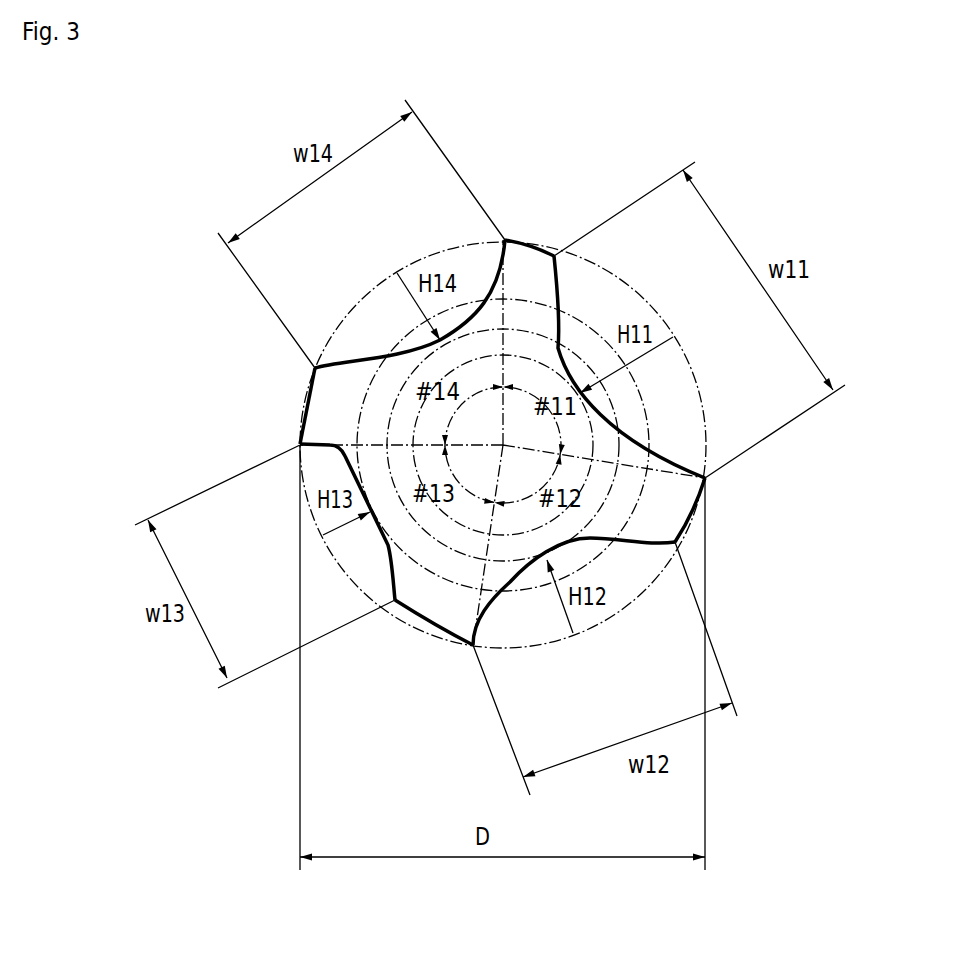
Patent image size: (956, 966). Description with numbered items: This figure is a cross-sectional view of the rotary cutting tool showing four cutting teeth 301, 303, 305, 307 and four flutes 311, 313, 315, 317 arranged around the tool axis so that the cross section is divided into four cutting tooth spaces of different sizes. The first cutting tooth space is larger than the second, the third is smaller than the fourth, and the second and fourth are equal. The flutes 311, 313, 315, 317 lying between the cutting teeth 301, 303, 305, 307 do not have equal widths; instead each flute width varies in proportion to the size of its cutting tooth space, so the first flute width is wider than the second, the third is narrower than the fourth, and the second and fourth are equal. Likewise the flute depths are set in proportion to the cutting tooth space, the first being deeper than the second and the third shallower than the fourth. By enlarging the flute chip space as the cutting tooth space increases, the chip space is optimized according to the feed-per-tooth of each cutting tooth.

The cutting tooth 301 is at (540, 248).
The cutting tooth 303 is at (690, 510).
The cutting tooth 305 is at (420, 620).
The cutting tooth 307 is at (303, 390).
The flute 311 is at (663, 408).
The flute 313 is at (520, 613).
The flute 315 is at (363, 552).
The flute 317 is at (387, 337).